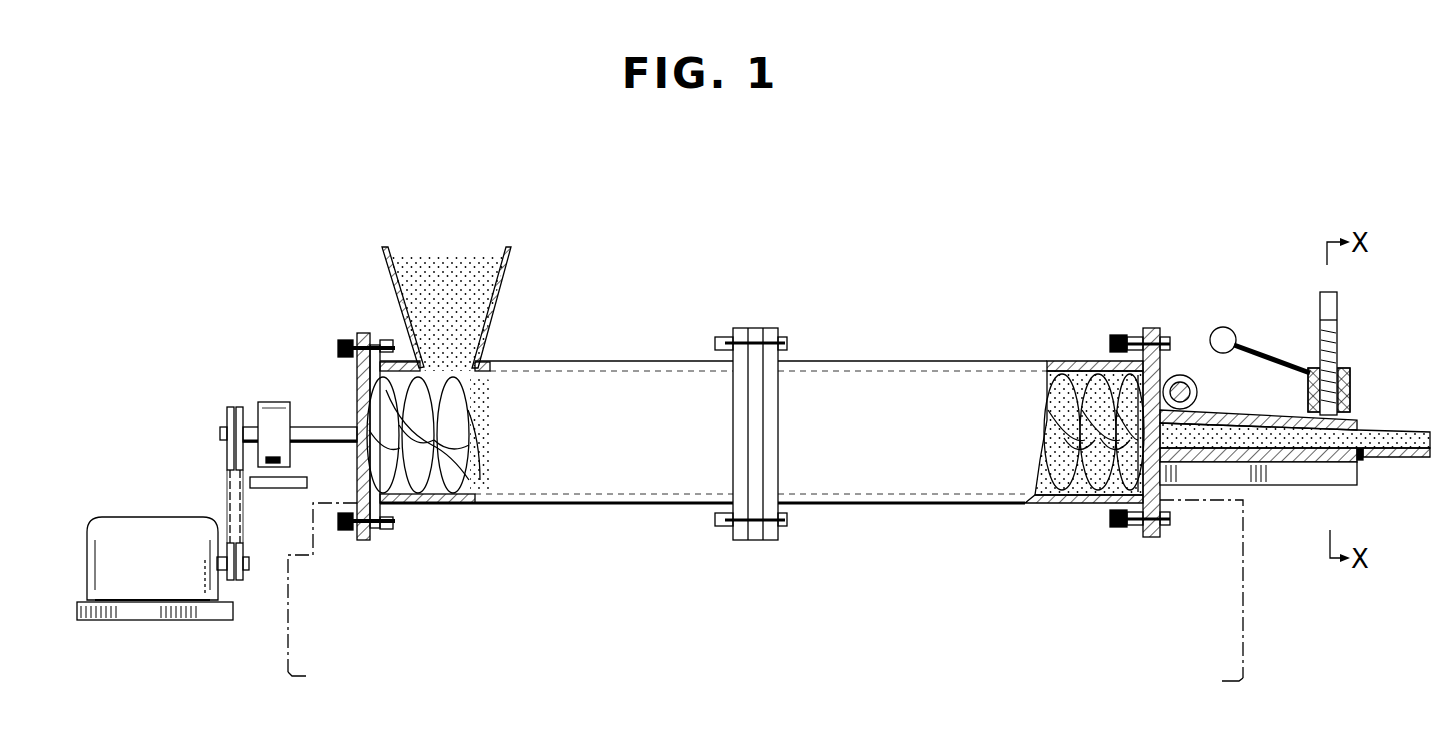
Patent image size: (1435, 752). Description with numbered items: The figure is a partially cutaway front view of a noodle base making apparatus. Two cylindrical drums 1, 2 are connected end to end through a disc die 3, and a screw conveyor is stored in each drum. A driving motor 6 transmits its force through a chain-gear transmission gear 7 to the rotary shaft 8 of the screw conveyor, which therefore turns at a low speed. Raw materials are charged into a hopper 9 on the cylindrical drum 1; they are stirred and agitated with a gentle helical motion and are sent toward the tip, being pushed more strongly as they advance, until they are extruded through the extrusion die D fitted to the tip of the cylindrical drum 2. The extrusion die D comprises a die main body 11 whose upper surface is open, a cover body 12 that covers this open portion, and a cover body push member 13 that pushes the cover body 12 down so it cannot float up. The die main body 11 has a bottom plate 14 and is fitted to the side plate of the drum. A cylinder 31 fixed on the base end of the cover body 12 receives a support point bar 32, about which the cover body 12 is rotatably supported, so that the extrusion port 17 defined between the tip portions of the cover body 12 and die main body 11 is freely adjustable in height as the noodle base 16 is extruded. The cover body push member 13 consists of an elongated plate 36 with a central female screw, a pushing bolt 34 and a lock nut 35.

The cylindrical drum 1 is at (615, 373).
The cylindrical drum 2 is at (913, 378).
The disc die 3 is at (758, 335).
The driving motor 6 is at (145, 527).
The chain-gear transmission gear 7 is at (213, 473).
The rotary shaft 8 is at (311, 425).
The hopper 9 is at (503, 292).
The die main body 11 is at (1231, 475).
The cover body 12 is at (1280, 418).
The cover body push member 13 is at (1348, 352).
The bottom plate 14 is at (1297, 462).
The noodle base 16 is at (1397, 438).
The extrusion port 17 is at (1364, 460).
The cylinder 31 is at (1178, 382).
The support point bar 32 is at (1197, 390).
The pushing bolt 34 is at (1338, 296).
The lock nut 35 is at (1347, 372).
The elongated plate 36 is at (1347, 394).
The extrusion die D is at (1278, 328).